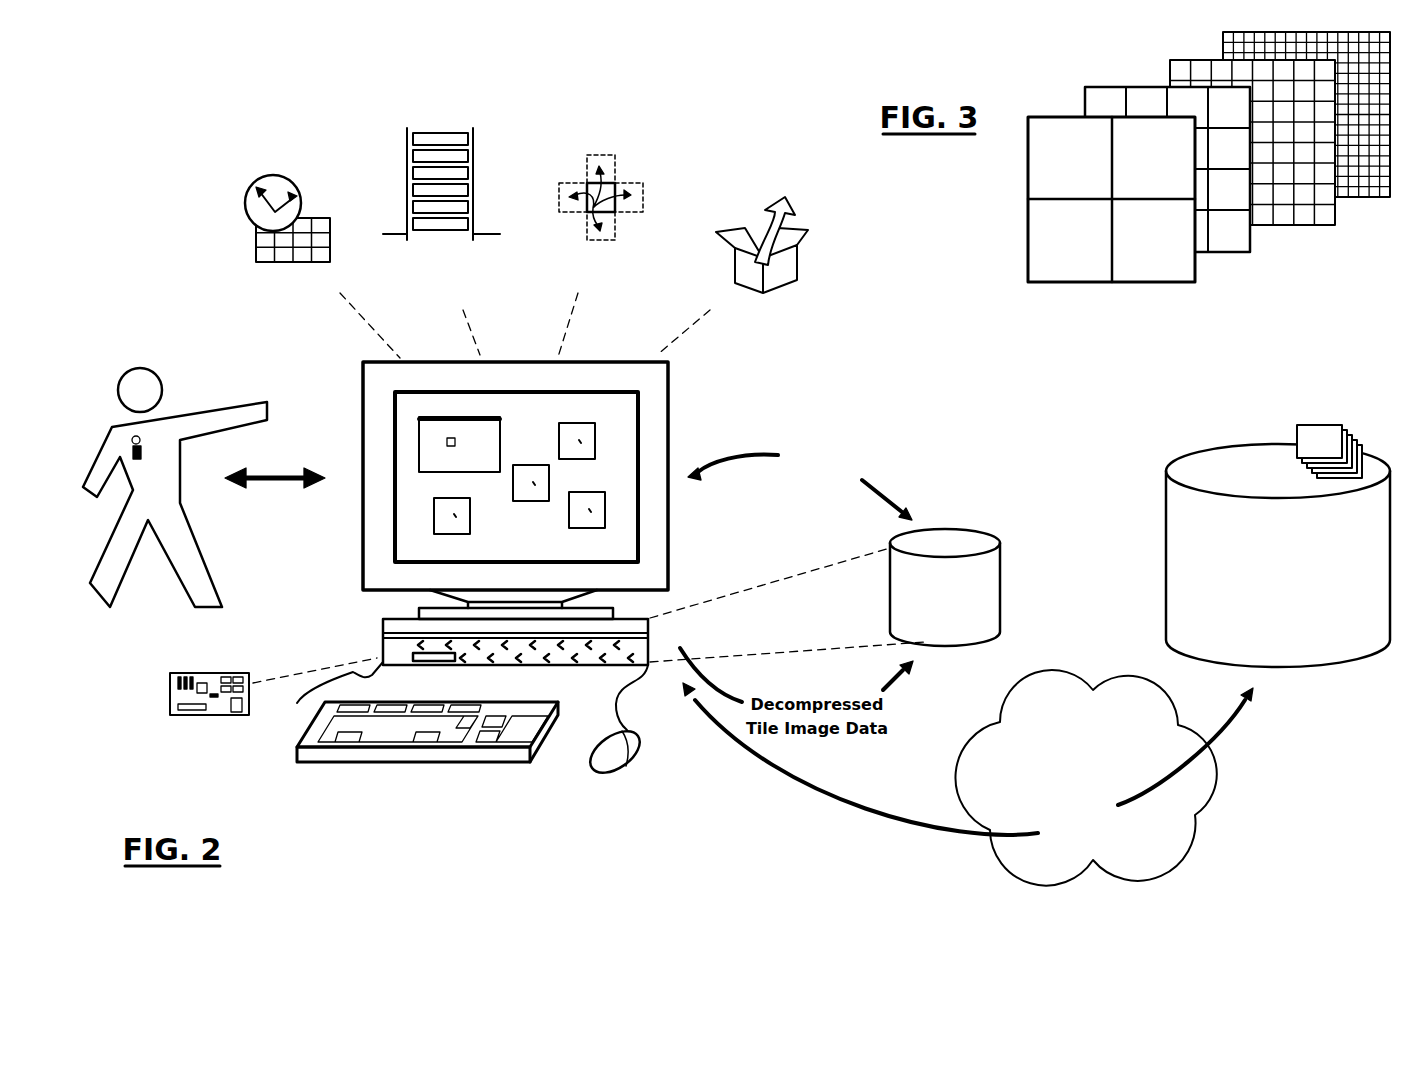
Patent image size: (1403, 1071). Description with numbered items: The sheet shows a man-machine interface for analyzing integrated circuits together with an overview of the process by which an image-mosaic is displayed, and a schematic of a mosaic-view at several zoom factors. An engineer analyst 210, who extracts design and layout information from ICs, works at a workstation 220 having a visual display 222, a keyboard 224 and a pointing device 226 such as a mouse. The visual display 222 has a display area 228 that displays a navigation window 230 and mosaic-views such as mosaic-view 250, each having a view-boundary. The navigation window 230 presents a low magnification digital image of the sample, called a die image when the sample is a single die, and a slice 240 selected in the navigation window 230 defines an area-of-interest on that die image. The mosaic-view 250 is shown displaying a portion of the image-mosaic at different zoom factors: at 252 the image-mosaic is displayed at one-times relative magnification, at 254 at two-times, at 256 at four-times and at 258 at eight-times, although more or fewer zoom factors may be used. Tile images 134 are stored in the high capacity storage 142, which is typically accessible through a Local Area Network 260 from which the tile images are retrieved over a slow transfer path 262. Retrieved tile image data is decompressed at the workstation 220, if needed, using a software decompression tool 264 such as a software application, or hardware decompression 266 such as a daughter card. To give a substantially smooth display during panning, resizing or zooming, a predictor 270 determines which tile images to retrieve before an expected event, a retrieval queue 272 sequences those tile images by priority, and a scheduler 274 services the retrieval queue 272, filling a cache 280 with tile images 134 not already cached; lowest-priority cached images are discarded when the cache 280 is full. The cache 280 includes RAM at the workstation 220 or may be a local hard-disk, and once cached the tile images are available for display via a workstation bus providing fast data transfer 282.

In FIG. 2, the engineer analyst 210 is at (237, 405).
In FIG. 2, the workstation 220 is at (494, 504).
In FIG. 2, the visual display 222 is at (509, 475).
In FIG. 2, the keyboard 224 is at (553, 737).
In FIG. 2, the pointing device 226 is at (641, 752).
In FIG. 2, the display area 228 is at (407, 405).
In FIG. 2, the navigation window 230 is at (490, 443).
In FIG. 2, the slice 240 is at (414, 393).
In FIG. 2, the mosaic-view 250 is at (587, 450).
In FIG. 3, the mosaic-view 250 is at (1163, 166).
In FIG. 3, the mosaic-view at 1× relative magnification 252 is at (1183, 268).
In FIG. 3, the mosaic-view at 2× relative magnification 254 is at (1097, 97).
In FIG. 3, the mosaic-view at 4× relative magnification 256 is at (1180, 70).
In FIG. 3, the mosaic-view at 8× relative magnification 258 is at (1370, 192).
In FIG. 2, the Local Area Network 260 is at (1240, 800).
In FIG. 2, the slow transfer path 262 is at (813, 812).
In FIG. 2, the software decompression tool 264 is at (818, 268).
In FIG. 2, the hardware decompression 266 is at (165, 686).
In FIG. 2, the predictor 270 is at (634, 163).
In FIG. 2, the retrieval queue 272 is at (386, 190).
In FIG. 2, the scheduler 274 is at (232, 243).
In FIG. 2, the cache 280 is at (963, 530).
In FIG. 2, the fast data transfer 282 is at (890, 490).
In FIG. 2, the tile images 134 is at (1330, 437).
In FIG. 2, the high capacity storage 142 is at (1166, 553).